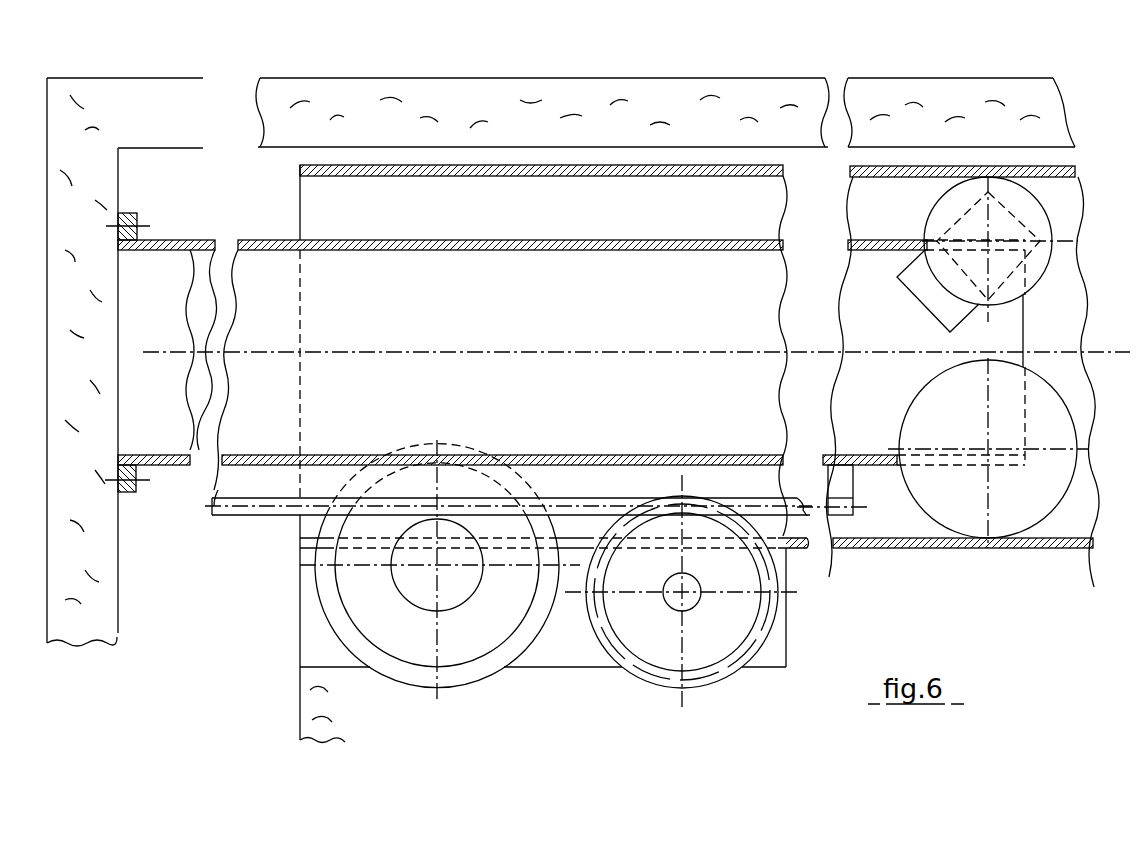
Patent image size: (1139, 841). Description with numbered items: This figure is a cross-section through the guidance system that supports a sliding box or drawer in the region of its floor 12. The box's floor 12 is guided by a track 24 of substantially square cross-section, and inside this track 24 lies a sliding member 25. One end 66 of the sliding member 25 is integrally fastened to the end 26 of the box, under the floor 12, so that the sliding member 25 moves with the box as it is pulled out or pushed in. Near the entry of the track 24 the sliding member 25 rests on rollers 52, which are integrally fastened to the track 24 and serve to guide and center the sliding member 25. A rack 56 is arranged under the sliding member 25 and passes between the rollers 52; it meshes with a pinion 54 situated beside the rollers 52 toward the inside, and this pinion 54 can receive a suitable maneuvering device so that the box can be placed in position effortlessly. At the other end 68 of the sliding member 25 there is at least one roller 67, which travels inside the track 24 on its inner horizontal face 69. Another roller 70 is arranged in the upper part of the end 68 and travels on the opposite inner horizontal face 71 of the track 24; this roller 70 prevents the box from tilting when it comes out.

The floor 12 is at (548, 77).
The track 24 is at (482, 170).
The sliding member 25 is at (265, 239).
The end of the box 26 is at (118, 528).
The rollers 52 is at (495, 670).
The pinion 54 is at (647, 682).
The rack 56 is at (270, 487).
The end of the sliding member 66 is at (140, 240).
The roller 67 is at (1048, 522).
The other end of the sliding member 68 is at (1027, 318).
The inner horizontal face of the track 69 is at (870, 528).
The roller 70 is at (1048, 220).
The inner horizontal face of the track 71 is at (890, 178).